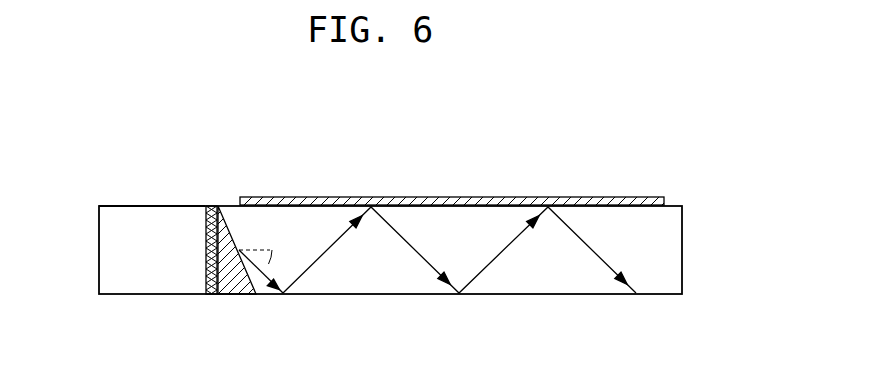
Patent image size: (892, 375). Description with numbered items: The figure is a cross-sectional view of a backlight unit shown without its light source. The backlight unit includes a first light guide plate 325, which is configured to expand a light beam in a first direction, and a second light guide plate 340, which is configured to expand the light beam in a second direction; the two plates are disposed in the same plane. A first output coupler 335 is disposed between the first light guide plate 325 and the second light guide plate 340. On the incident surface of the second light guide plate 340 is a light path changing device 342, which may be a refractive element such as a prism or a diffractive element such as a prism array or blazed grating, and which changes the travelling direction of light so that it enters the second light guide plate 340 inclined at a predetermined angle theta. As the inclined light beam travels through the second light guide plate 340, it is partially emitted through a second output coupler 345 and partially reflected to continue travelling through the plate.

The first light guide plate 325 is at (137, 215).
The first output coupler 335 is at (213, 205).
The second light guide plate 340 is at (672, 247).
The light path changing device 342 is at (230, 295).
The second output coupler 345 is at (660, 201).